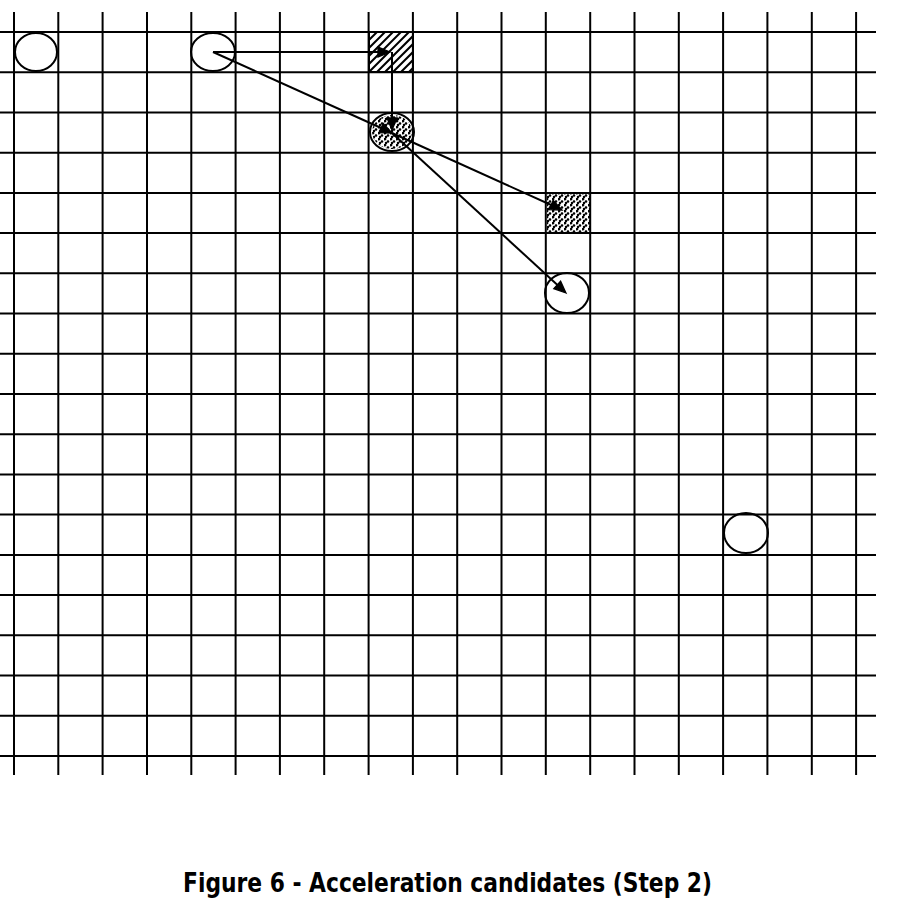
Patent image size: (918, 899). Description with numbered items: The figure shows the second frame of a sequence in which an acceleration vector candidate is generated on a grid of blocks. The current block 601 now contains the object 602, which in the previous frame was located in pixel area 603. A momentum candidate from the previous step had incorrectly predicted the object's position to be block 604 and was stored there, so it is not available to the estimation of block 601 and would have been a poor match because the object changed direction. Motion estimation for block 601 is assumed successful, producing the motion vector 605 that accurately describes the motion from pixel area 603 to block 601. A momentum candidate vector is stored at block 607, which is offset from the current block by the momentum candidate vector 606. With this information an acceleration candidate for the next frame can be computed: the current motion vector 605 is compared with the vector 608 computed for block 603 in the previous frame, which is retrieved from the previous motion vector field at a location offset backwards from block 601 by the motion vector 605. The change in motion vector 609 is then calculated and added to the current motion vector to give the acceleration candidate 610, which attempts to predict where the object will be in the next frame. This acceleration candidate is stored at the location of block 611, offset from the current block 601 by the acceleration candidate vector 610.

The block 601 is at (392, 153).
The object 602 is at (375, 143).
The pixel area 603 is at (192, 67).
The block 604 is at (415, 43).
The motion vector 605 is at (295, 88).
The momentum candidate vector 606 is at (487, 173).
The block 607 is at (592, 202).
The vector 608 is at (267, 52).
The change in motion vector 609 is at (393, 92).
The acceleration candidate 610 is at (478, 215).
The block 611 is at (545, 285).